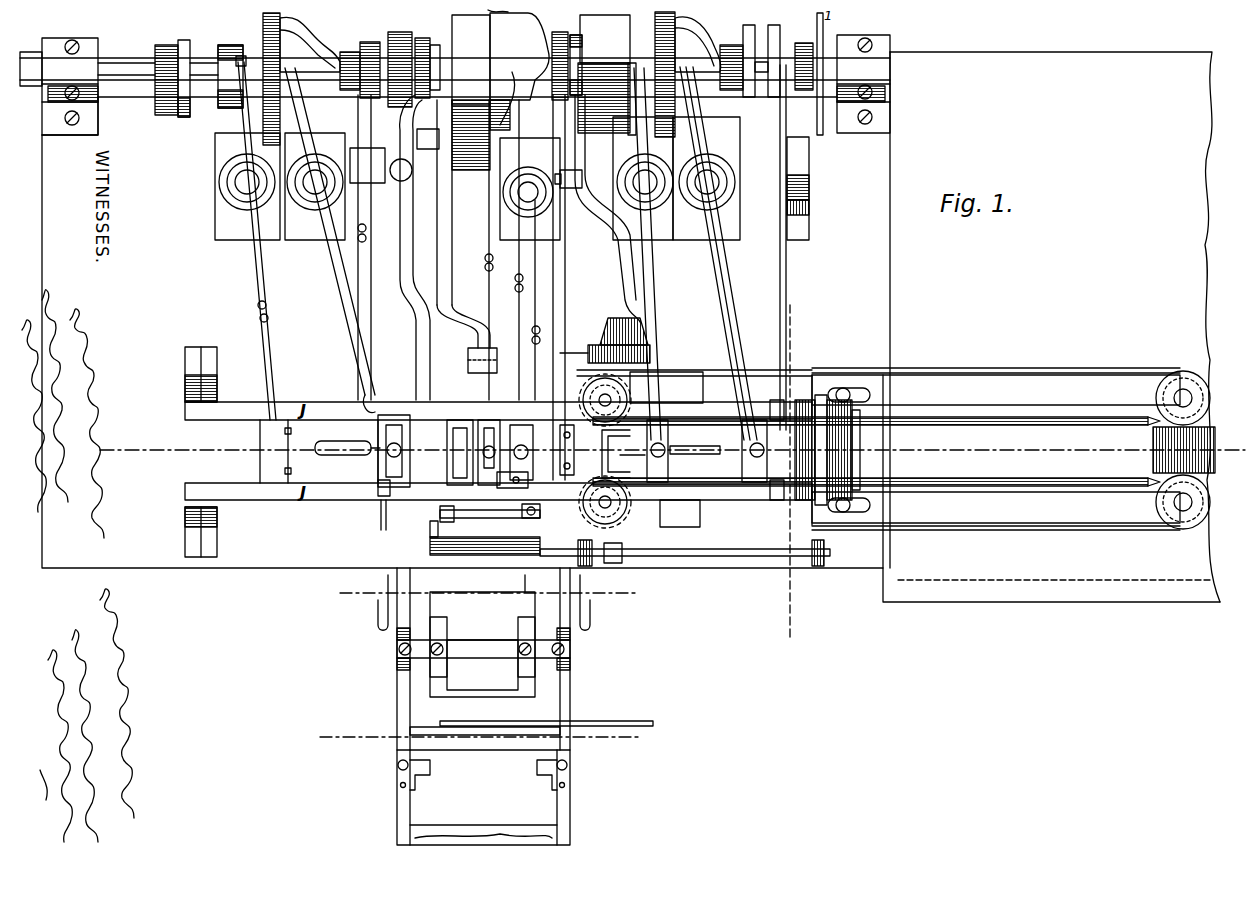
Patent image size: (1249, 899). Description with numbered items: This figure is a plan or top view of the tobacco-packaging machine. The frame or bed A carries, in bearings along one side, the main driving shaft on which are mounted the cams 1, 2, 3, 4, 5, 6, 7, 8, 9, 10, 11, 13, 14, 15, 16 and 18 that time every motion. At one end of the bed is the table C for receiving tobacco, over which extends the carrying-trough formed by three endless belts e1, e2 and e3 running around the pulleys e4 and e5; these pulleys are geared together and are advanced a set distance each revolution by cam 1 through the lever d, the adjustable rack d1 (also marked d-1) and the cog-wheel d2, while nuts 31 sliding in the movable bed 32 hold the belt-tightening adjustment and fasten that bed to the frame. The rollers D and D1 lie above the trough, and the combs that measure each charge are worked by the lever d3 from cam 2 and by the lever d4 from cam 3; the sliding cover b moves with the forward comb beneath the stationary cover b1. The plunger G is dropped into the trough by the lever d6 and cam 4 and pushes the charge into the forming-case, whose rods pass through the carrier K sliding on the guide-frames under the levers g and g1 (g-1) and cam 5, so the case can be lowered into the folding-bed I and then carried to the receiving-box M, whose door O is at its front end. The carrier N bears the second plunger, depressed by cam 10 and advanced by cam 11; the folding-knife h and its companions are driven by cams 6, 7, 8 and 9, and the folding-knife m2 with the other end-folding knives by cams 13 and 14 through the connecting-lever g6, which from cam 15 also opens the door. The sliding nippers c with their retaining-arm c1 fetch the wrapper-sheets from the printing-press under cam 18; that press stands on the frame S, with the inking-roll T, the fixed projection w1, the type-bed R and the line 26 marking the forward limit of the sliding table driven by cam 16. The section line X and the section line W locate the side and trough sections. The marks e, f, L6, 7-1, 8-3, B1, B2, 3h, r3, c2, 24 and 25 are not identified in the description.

The frame or bed A is at (631, 349).
The table C is at (1055, 327).
The folding-knife h is at (455, 69).
The cam 16 is at (172, 71).
The cam 15 is at (230, 62).
The cam 11 is at (301, 77).
The cam 14 is at (352, 62).
The cam 13 is at (370, 61).
The cam 7 is at (400, 61).
The cam 9 is at (422, 61).
The cam 8 is at (435, 55).
The cam 18 is at (471, 92).
The cam 5 is at (519, 71).
The cam 10 is at (507, 9).
The cam 6 is at (556, 54).
The cam 1 is at (574, 34).
The cam 4 is at (607, 75).
The cam 3 is at (688, 71).
The cam 2 is at (771, 70).
The eccentric bearings e is at (512, 249).
The lever g is at (259, 238).
The lever g1 is at (330, 240).
The connecting-lever g6 is at (370, 247).
The lever 7-1 is at (428, 247).
The lever 8-3 is at (473, 250).
The lever g-1 is at (535, 250).
The lever d is at (607, 208).
The rack d1 is at (611, 337).
The cog-wheel d2 is at (573, 343).
The rack d-1 is at (651, 275).
The lever d6 is at (697, 274).
The lever d4 is at (747, 385).
The lever d3 is at (784, 247).
The lever L6 is at (559, 287).
The section line W W is at (796, 474).
The section line x x X is at (667, 450).
The door O is at (319, 451).
The receiving-box M is at (347, 461).
The carrier N is at (425, 451).
The carrier K is at (510, 447).
The folding-bed I is at (567, 450).
The plunger G is at (616, 454).
The stationary cover b1 is at (630, 461).
The slide or cover b is at (695, 458).
The pulleys e4 is at (894, 450).
The shaft f is at (694, 434).
The rod B1 is at (876, 413).
The rod B2 is at (876, 487).
The movable bed 32 is at (996, 389).
The bar 3h is at (996, 509).
The endless belt e3 is at (996, 359).
The endless belt e1 is at (996, 539).
The pulleys e5 is at (1165, 449).
The endless belt e2 is at (1123, 456).
The type-bed R is at (978, 451).
The roller D is at (820, 450).
The roller D1 is at (775, 464).
The nuts 31 is at (849, 448).
The folding-knife m2 is at (388, 524).
The retaining-arm c1 is at (490, 521).
The sliding nippers c is at (485, 538).
The rod r3 is at (689, 546).
The pin c2 is at (518, 585).
The inking-roll T is at (484, 659).
The line 26 26 is at (487, 585).
The section line 25 is at (480, 733).
The plate 24 is at (531, 719).
The frame S is at (493, 797).
The fixed projection w1 is at (481, 780).